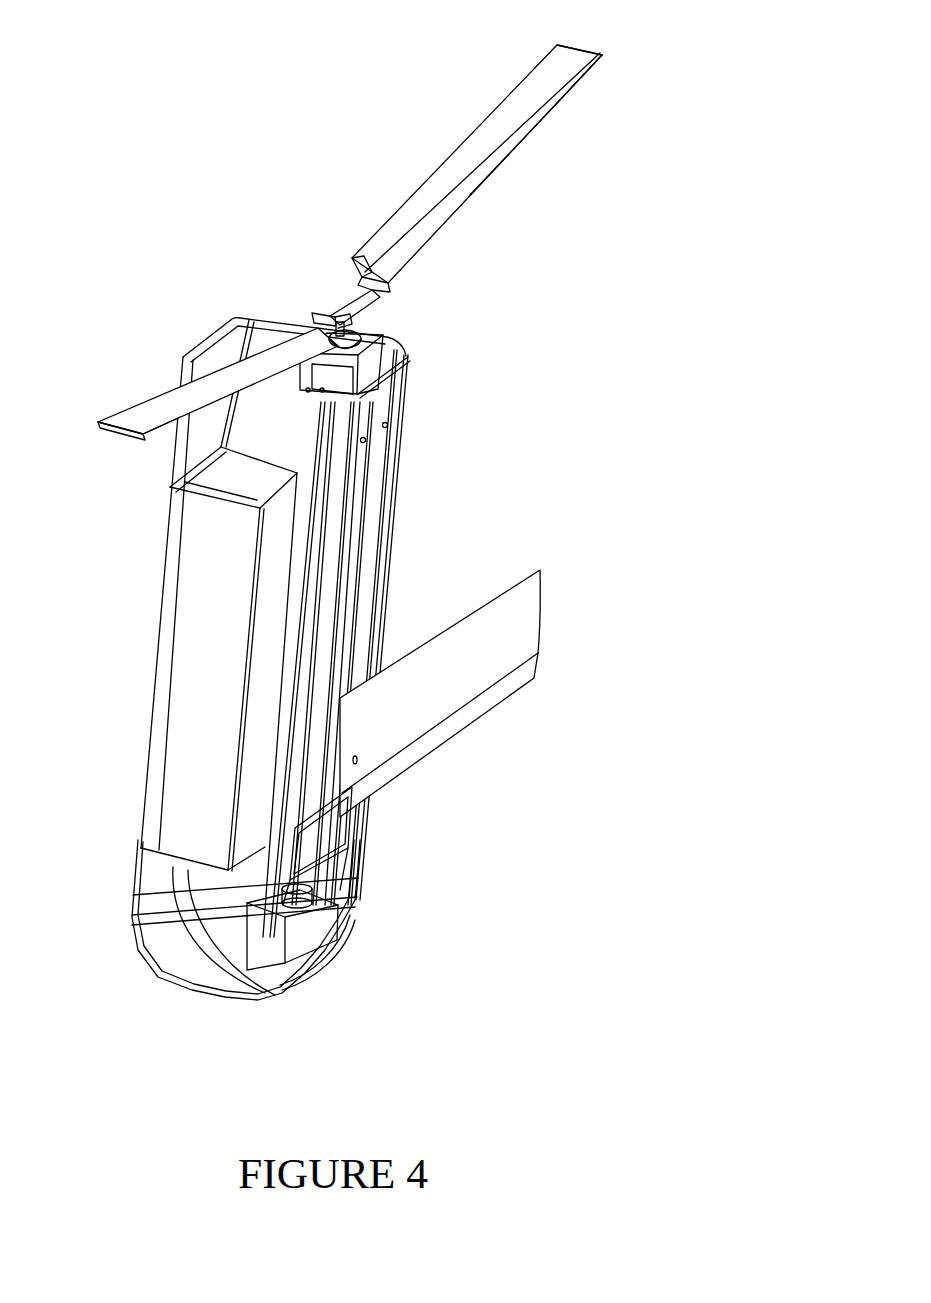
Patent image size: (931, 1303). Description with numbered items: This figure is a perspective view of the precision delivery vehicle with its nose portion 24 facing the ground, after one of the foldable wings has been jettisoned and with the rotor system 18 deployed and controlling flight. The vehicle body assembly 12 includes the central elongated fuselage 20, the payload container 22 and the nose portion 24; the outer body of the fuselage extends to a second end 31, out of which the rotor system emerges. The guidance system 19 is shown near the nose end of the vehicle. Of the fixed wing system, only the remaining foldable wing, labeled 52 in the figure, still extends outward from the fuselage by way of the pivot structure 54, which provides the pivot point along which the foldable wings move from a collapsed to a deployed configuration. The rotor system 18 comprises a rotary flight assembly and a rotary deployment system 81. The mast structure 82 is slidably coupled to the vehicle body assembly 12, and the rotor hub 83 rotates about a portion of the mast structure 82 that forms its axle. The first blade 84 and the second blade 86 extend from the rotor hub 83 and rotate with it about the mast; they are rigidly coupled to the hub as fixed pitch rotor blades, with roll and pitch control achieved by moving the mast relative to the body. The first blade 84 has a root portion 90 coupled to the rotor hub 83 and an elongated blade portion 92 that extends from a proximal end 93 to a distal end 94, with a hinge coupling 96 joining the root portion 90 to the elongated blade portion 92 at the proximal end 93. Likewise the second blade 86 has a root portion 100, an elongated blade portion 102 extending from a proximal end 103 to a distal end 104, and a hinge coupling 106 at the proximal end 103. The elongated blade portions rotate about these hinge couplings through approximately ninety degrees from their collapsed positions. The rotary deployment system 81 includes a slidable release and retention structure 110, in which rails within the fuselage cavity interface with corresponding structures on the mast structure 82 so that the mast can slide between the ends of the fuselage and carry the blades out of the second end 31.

The vehicle body assembly 12 is at (388, 458).
The rotor system 18 is at (435, 152).
The guidance system 19 is at (320, 960).
The central elongated fuselage 20 is at (399, 576).
The payload container 22 is at (128, 788).
The nose portion 24 is at (192, 983).
The second end 31 is at (203, 355).
The fin 52 is at (432, 757).
The pivot structure 54 is at (333, 857).
The rotary deployment system 81 is at (318, 505).
The mast structure 82 is at (362, 343).
The rotor hub 83 is at (348, 322).
The first blade 84 is at (108, 431).
The second blade 86 is at (563, 105).
The root portion 90 is at (314, 318).
The elongated blade portion 92 is at (135, 405).
The proximal end 93 is at (320, 322).
The distal end 94 is at (138, 436).
The hinge coupling 96 is at (408, 357).
The root portion 100 is at (348, 298).
The elongated blade portion 102 is at (485, 188).
The proximal end 103 is at (390, 290).
The distal end 104 is at (568, 50).
The hinge coupling 106 is at (353, 272).
The slidable release and retention structure 110 is at (318, 938).